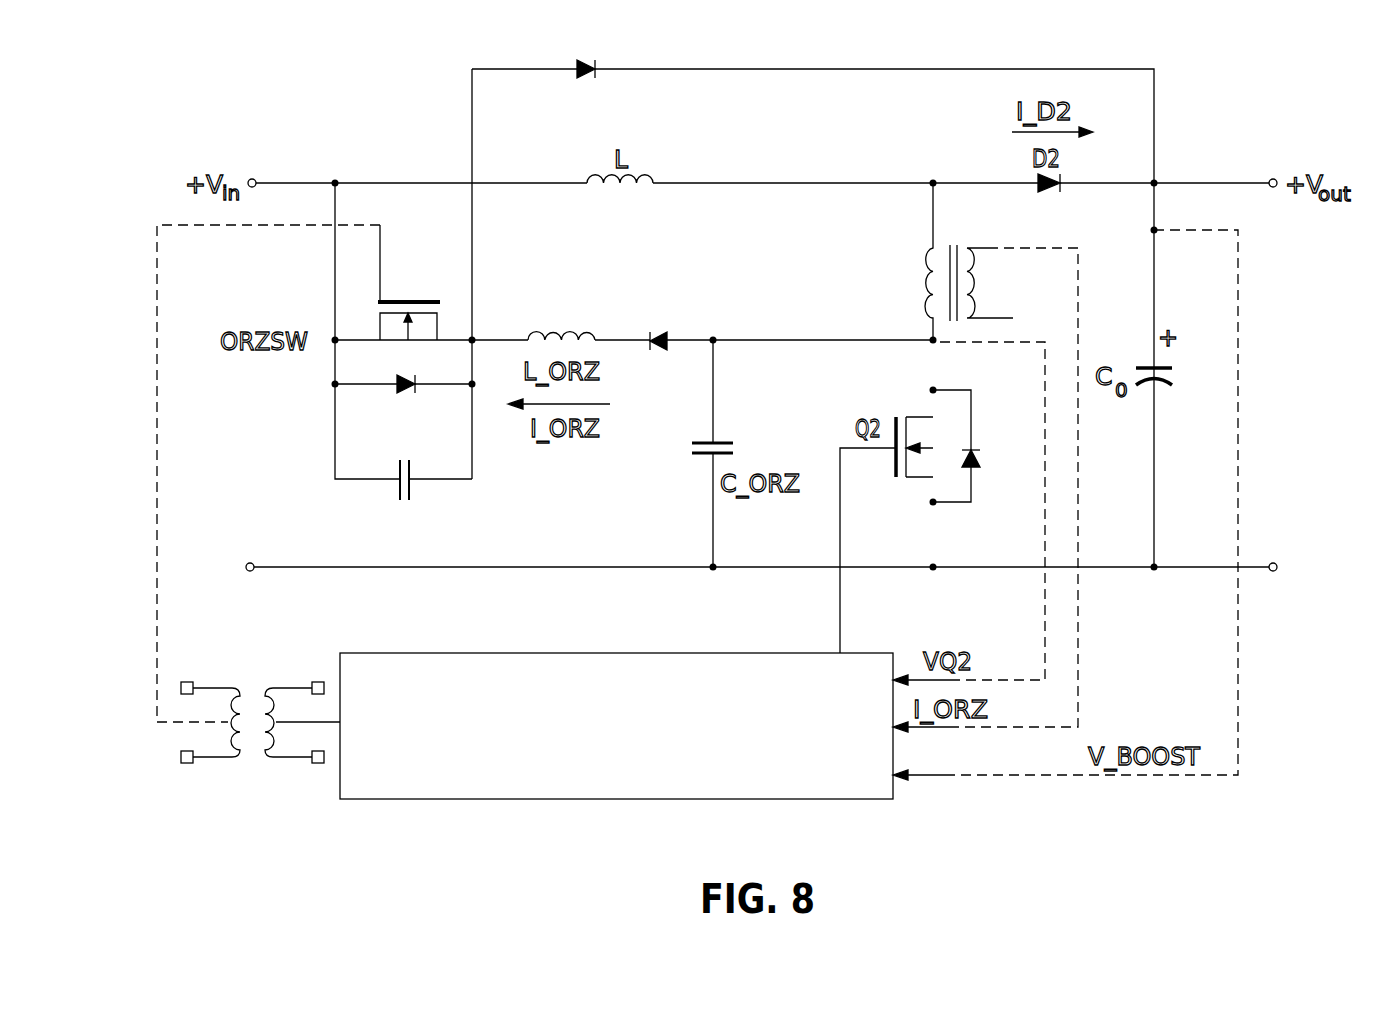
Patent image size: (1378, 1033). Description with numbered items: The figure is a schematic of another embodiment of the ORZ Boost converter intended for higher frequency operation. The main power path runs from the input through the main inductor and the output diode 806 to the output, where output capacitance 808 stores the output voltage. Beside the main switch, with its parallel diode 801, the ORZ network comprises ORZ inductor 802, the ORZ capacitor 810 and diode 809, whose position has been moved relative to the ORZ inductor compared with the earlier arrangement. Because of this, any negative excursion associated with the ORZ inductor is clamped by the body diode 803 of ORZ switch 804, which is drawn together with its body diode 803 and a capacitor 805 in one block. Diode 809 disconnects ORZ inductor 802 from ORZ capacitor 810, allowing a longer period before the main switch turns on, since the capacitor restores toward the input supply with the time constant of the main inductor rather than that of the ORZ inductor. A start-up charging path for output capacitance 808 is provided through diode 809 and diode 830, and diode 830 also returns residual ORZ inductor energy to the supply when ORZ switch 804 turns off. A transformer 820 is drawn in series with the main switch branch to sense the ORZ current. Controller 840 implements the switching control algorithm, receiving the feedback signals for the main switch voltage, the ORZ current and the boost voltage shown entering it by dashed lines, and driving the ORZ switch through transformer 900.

The body diode of main switch Q2 801 is at (976, 447).
The ORZ inductor 802 is at (567, 333).
The body diode 803 is at (399, 392).
The ORZ switch 804 is at (420, 299).
The capacitor of ORZ switch 805 is at (412, 500).
The output diode D2 806 is at (1046, 190).
The output capacitance 808 is at (1170, 366).
The diode 809 is at (654, 335).
The C_ORZ capacitor 810 is at (726, 440).
The current sense transformer 820 is at (951, 247).
The diode 830 is at (588, 60).
The controller 840 is at (543, 653).
The isolation transformer 900 is at (252, 705).